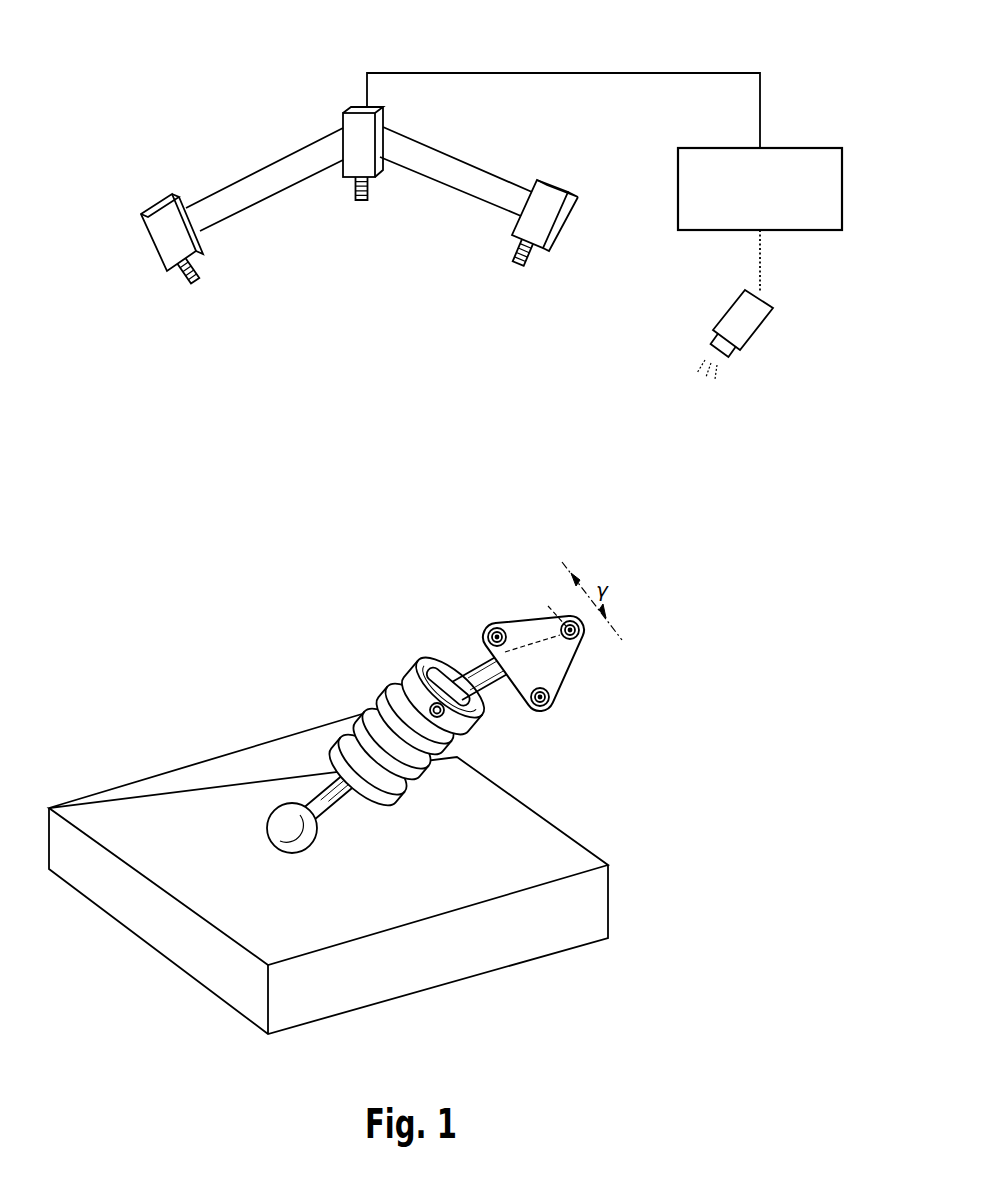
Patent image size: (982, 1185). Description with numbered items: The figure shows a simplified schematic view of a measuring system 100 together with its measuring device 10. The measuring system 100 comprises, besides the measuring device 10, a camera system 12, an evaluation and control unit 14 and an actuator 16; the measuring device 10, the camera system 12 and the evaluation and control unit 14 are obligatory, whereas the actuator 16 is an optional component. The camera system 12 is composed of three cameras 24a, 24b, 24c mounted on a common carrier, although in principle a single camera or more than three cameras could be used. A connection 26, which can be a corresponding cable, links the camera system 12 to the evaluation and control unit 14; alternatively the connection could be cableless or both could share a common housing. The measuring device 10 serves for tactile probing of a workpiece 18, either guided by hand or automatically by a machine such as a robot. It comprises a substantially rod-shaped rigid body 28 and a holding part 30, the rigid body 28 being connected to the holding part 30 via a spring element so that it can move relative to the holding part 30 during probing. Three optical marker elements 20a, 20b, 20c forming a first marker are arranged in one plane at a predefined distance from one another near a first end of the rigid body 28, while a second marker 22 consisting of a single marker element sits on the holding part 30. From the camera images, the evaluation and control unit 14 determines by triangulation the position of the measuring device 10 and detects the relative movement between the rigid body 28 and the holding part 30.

The measuring system 100 is at (113, 102).
The camera system 12 is at (256, 185).
The evaluation and control unit 14 is at (803, 160).
The actuator 16 is at (747, 322).
The connection 26 is at (590, 73).
The camera 24a is at (165, 240).
The camera 24b is at (352, 128).
The camera 24c is at (562, 221).
The measuring device 10 is at (403, 603).
The workpiece 18 is at (516, 950).
The marker element 20a is at (551, 701).
The marker element 20b is at (495, 624).
The marker element 20c is at (580, 634).
The second marker 22 is at (456, 727).
The rigid body 28 is at (340, 812).
The holding part 30 is at (410, 672).